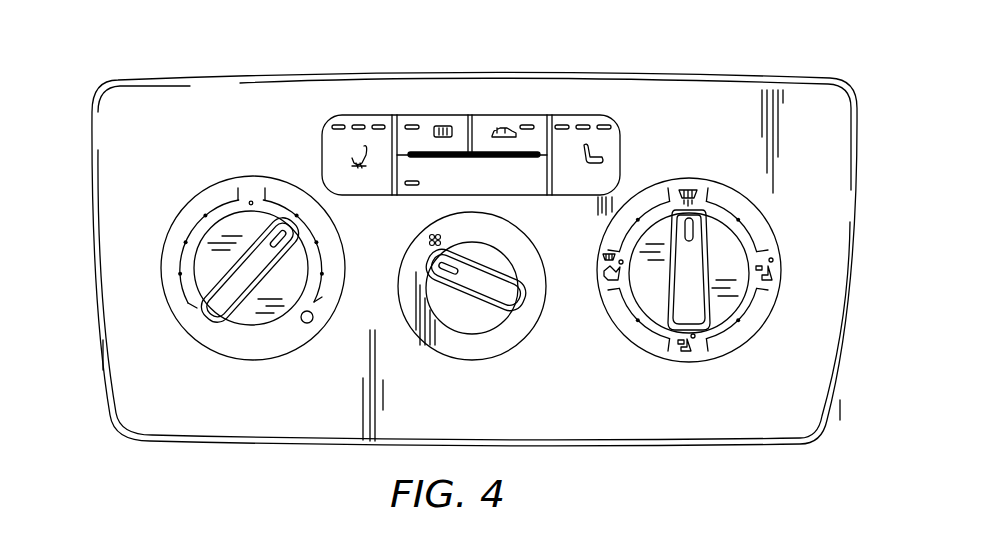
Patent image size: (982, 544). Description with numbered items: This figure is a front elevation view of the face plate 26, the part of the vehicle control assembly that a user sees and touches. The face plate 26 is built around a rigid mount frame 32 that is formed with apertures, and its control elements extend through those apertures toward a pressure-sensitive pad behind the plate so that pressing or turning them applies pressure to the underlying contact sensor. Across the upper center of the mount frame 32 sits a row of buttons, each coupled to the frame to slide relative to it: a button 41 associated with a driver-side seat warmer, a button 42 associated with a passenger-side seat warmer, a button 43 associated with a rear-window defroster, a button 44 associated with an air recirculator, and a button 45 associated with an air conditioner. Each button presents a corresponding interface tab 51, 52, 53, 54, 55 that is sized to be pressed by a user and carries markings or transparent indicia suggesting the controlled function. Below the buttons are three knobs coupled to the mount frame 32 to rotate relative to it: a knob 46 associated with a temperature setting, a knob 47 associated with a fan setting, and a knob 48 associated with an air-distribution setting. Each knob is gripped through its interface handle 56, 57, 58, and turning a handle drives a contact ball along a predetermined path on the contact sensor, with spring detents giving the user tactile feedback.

The face plate 26 is at (103, 68).
The mount frame 32 is at (630, 100).
The button 41 is at (338, 153).
The button 42 is at (595, 155).
The interface tab 51 is at (343, 181).
The interface tab 52 is at (590, 183).
The button 43 is at (428, 124).
The interface tab 53 is at (455, 124).
The interface tab 54 is at (481, 124).
The button 44 is at (500, 122).
The interface tab 55 is at (512, 168).
The button 45 is at (530, 172).
The knob 46 is at (280, 358).
The knob 47 is at (482, 360).
The knob 48 is at (735, 350).
The interface handle 56 is at (205, 307).
The interface handle 57 is at (520, 310).
The interface handle 58 is at (667, 330).